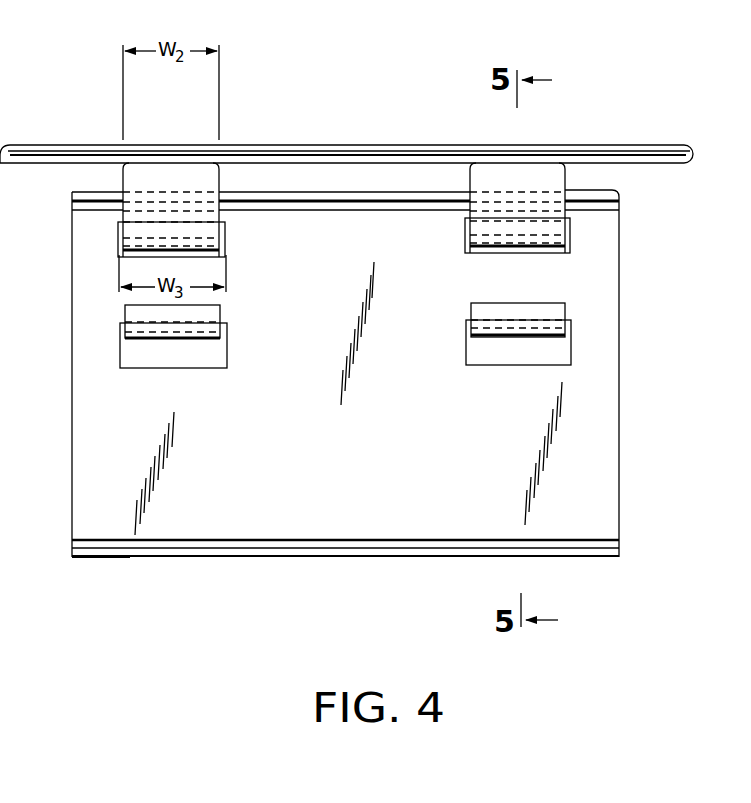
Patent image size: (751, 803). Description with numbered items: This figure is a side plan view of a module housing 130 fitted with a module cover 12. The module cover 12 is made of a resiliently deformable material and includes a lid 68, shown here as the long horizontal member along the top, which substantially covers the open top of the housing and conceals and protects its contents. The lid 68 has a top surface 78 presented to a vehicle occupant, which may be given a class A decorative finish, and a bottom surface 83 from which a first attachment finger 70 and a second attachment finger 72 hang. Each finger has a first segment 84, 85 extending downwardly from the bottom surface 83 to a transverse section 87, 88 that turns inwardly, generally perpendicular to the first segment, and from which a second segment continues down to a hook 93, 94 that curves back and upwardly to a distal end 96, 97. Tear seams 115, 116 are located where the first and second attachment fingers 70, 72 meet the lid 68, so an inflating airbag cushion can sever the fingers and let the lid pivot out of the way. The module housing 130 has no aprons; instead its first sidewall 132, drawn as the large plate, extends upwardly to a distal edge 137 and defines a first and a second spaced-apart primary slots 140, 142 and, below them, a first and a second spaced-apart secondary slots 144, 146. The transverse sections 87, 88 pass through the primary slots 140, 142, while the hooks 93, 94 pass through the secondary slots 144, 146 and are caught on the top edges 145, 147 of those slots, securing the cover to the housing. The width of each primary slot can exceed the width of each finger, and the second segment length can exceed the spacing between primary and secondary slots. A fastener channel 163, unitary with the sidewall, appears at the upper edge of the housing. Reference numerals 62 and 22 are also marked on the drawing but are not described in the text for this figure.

The module cover 12 is at (353, 108).
The lid 68 is at (346, 128).
The top surface 78 is at (248, 145).
The tear seam 115 is at (204, 166).
The tear seam 116 is at (470, 166).
The distal edge 137 is at (619, 190).
The fastener channel 163 is at (619, 212).
The first attachment finger 70 is at (152, 227).
The second attachment finger 72 is at (500, 224).
The bottom surface 83 is at (317, 166).
The first segment 84 is at (221, 212).
The first segment 85 is at (566, 212).
The transverse section 87 is at (228, 239).
The transverse section 88 is at (545, 249).
The first primary slot 140 is at (118, 250).
The second primary slot 142 is at (465, 241).
The top edge 145 is at (145, 342).
The top edge 147 is at (500, 340).
The distal end 96 is at (215, 305).
The distal end 97 is at (546, 303).
The hook 93 is at (210, 340).
The hook 94 is at (540, 337).
The first secondary slot 144 is at (140, 368).
The second secondary slot 146 is at (465, 354).
The first sidewall 132 is at (376, 361).
The panel bottom edge 62 is at (120, 552).
The bottom rail 22 is at (348, 557).
The module housing 130 is at (203, 580).